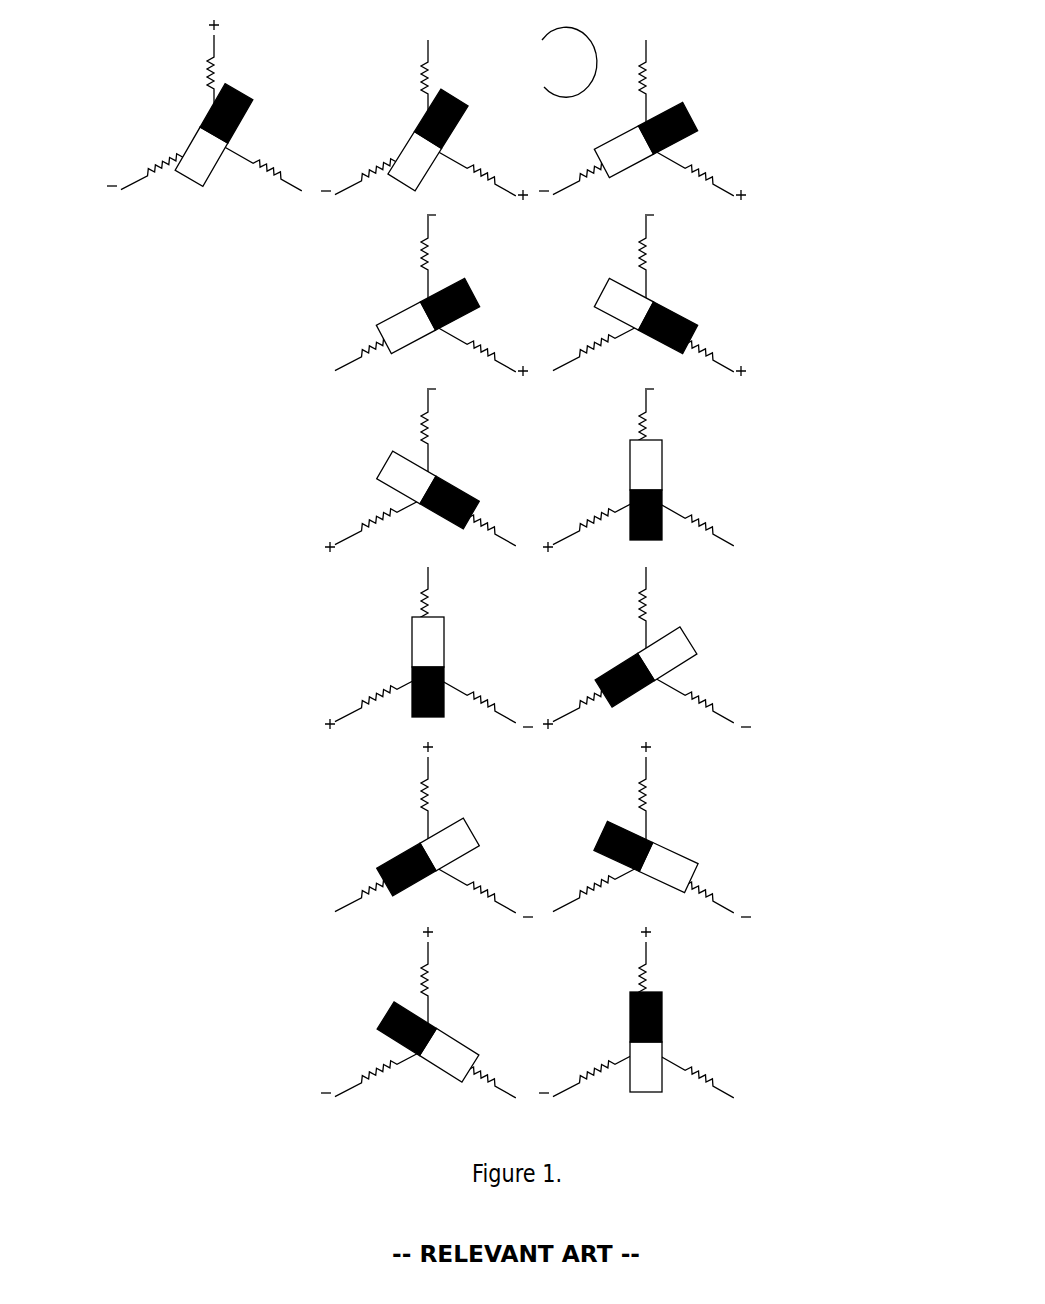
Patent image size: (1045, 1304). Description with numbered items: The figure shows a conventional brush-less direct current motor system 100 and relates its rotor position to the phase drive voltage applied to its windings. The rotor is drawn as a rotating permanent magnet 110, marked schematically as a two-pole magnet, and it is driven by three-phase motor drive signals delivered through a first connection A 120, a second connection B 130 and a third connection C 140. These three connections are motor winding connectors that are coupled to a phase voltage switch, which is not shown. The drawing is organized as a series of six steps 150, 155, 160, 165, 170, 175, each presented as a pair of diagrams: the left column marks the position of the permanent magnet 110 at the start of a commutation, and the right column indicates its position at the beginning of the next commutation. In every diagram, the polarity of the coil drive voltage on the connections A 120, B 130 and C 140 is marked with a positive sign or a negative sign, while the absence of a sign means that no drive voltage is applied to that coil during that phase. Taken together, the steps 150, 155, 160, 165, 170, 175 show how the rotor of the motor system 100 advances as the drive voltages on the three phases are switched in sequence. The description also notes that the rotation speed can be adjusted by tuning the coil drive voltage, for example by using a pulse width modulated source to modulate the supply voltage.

The conventional motor system 100 is at (797, 53).
The rotating permanent magnet 110 is at (234, 121).
The first connection A 120 is at (179, 77).
The second connection B 130 is at (136, 165).
The third connection C 140 is at (274, 154).
The step 150 is at (585, 118).
The step 155 is at (591, 297).
The step 160 is at (587, 469).
The step 165 is at (587, 646).
The step 170 is at (594, 829).
The step 175 is at (585, 1012).